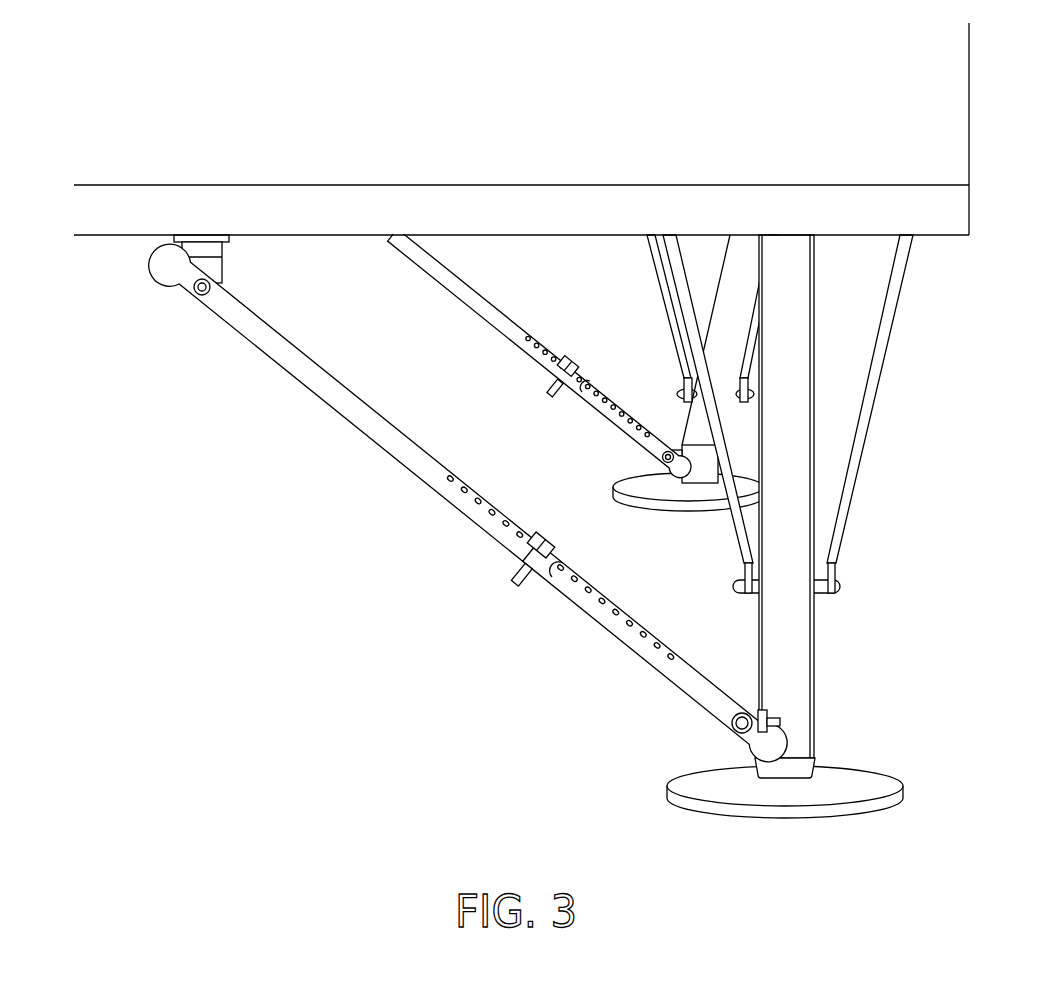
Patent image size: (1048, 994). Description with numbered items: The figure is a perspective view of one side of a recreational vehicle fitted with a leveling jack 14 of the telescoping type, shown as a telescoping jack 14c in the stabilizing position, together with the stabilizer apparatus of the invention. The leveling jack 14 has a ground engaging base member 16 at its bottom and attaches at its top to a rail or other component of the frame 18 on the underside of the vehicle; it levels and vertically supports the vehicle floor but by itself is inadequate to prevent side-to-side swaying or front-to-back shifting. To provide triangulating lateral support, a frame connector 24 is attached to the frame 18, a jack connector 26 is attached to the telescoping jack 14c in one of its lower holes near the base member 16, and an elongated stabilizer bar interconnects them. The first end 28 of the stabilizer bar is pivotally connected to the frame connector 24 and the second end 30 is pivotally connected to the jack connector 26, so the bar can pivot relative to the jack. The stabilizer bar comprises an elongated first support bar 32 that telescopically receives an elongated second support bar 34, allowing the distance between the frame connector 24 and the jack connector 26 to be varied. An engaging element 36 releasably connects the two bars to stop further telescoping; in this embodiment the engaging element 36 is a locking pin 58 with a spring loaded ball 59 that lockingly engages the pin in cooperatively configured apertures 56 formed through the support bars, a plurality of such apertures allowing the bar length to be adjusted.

The leveling jack 14 is at (817, 526).
The telescoping jack 14c is at (818, 624).
The ground engaging base member 16 is at (670, 788).
The frame 18 is at (472, 198).
The frame connector 24 is at (240, 267).
The jack connector 26 is at (779, 699).
The first end 28 is at (196, 317).
The second end 30 is at (468, 502).
The first support bar 32 is at (380, 450).
The second support bar 34 is at (668, 679).
The engaging element 36 is at (482, 583).
The apertures 56 is at (470, 487).
The locking pin 58 is at (544, 536).
The spring loaded ball 59 is at (528, 584).